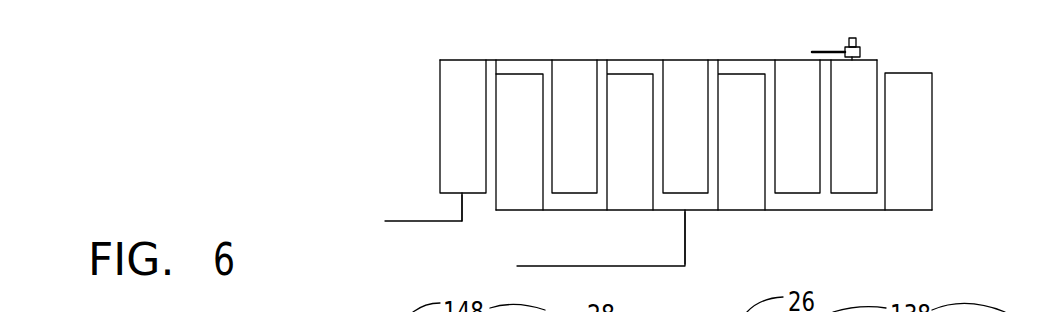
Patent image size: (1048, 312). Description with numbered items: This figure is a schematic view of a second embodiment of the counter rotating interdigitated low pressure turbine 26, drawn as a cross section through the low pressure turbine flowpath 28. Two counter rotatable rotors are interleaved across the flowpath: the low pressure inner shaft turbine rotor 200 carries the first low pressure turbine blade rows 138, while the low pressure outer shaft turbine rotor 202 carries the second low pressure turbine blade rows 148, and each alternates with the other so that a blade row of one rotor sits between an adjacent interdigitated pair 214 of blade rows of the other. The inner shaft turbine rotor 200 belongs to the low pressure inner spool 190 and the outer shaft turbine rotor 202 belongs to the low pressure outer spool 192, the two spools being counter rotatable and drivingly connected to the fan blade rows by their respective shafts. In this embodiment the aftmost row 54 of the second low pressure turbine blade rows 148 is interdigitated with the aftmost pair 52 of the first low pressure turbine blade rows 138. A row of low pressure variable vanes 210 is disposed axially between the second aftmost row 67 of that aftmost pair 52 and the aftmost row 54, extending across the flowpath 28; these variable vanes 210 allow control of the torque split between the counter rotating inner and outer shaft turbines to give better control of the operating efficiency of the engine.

The low pressure turbine 26 is at (483, 20).
The low pressure turbine flowpath 28 is at (420, 127).
The second low pressure turbine blade rows 148 is at (797, 78).
The first low pressure turbine blade rows 138 is at (520, 185).
The aftmost row 54 is at (814, 120).
The low pressure variable vanes 210 is at (872, 103).
The interdigitated pair 214 is at (747, 93).
The second aftmost row 67 is at (926, 123).
The aftmost pair 52 is at (740, 162).
The low pressure outer spool 192 is at (393, 221).
The low pressure outer shaft turbine rotor 202 is at (430, 223).
The low pressure inner spool 190 is at (600, 266).
The low pressure inner shaft turbine rotor 200 is at (685, 253).